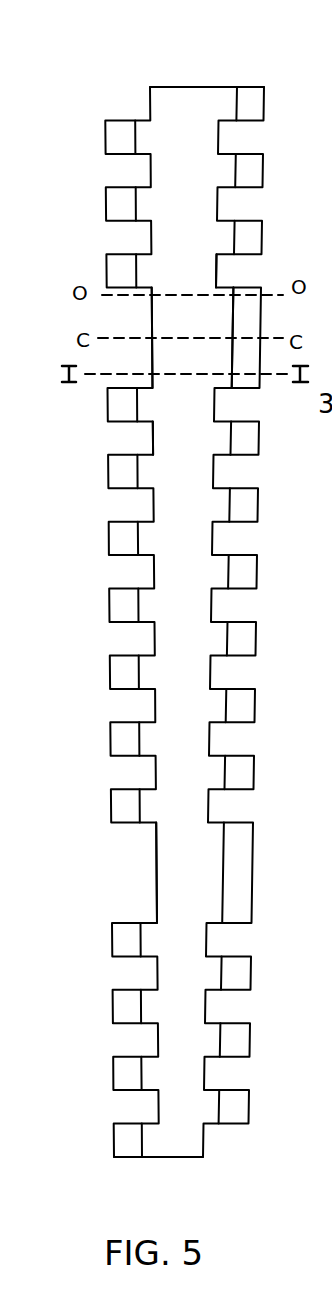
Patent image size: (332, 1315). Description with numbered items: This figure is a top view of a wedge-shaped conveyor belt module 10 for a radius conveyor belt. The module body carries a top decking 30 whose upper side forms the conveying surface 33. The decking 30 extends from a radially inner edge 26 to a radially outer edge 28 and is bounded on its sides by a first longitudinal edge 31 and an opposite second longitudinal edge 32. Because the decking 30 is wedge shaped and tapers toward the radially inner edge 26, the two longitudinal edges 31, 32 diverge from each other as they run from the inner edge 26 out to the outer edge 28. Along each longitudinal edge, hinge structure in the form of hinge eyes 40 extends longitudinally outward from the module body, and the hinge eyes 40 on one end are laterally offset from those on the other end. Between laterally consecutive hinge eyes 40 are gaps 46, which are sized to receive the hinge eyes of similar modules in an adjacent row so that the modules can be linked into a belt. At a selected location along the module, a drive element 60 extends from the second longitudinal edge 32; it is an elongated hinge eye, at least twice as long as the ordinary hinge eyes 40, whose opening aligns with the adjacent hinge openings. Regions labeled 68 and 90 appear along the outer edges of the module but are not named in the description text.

The conveyor belt module 10 is at (210, 72).
The radially inner edge 26 is at (173, 1157).
The radially outer edge 28 is at (191, 86).
The top decking 30 is at (182, 172).
The first longitudinal edge 31 is at (150, 440).
The second longitudinal edge 32 is at (217, 268).
The conveying surface 33 is at (203, 483).
The hinge eyes 40 is at (107, 267).
The gaps 46 is at (113, 170).
The drive element 60 is at (245, 335).
The flat portion 68 is at (245, 875).
The flat edge portion 90 is at (157, 866).